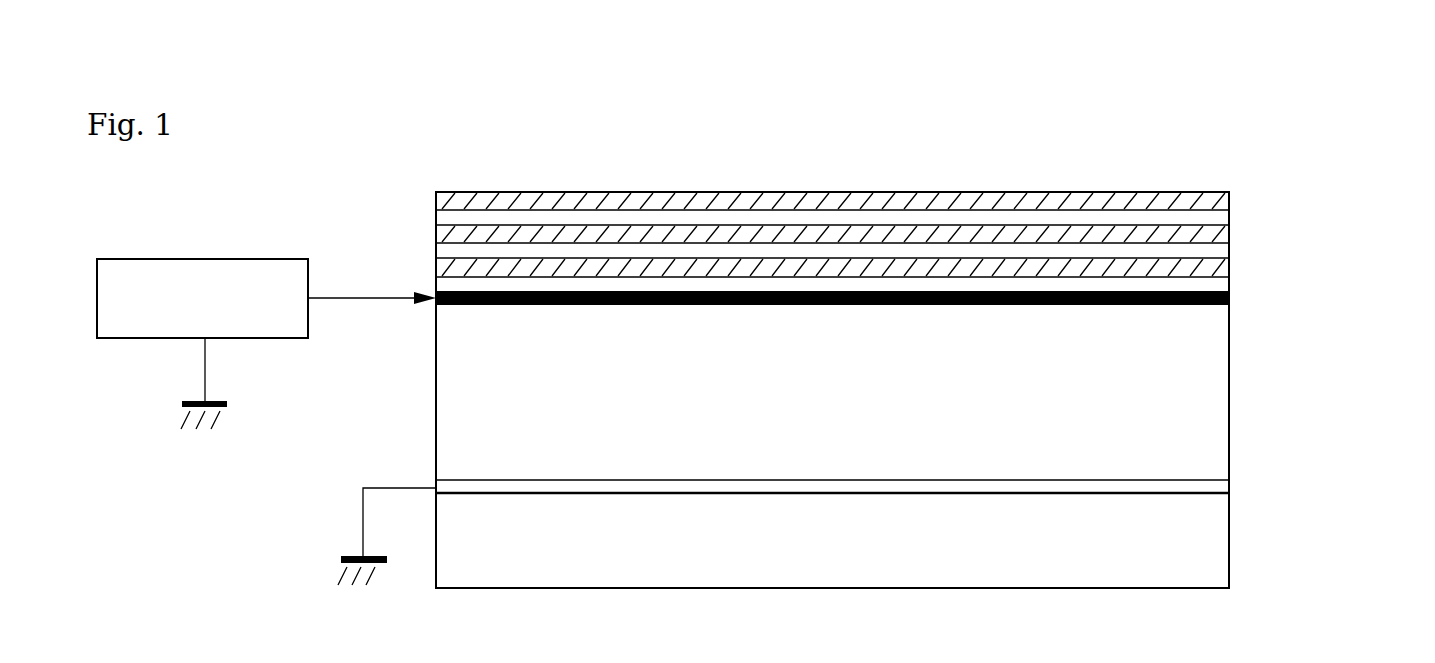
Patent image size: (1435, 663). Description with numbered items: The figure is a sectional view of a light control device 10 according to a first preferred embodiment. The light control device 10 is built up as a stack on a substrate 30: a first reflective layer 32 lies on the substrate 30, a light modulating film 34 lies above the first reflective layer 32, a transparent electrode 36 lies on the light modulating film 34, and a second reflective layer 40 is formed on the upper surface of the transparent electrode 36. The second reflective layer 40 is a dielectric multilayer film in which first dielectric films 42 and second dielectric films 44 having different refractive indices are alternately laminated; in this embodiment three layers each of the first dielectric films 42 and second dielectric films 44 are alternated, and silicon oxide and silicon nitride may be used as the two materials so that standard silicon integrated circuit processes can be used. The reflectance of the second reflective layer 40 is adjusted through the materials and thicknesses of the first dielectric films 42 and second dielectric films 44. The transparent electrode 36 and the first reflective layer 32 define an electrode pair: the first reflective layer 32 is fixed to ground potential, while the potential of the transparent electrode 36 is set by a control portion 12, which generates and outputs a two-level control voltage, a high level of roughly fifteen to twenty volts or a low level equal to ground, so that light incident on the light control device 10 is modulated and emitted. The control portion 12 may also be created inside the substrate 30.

The light control device 10 is at (842, 606).
The control portion 12 is at (212, 259).
The substrate 30 is at (1214, 535).
The first reflective layer 32 is at (1214, 486).
The light modulating film 34 is at (1214, 391).
The transparent electrode 36 is at (832, 305).
The second reflective layer 40 is at (1343, 40).
The first dielectric films 42 is at (1229, 217).
The second dielectric films 44 is at (1229, 200).